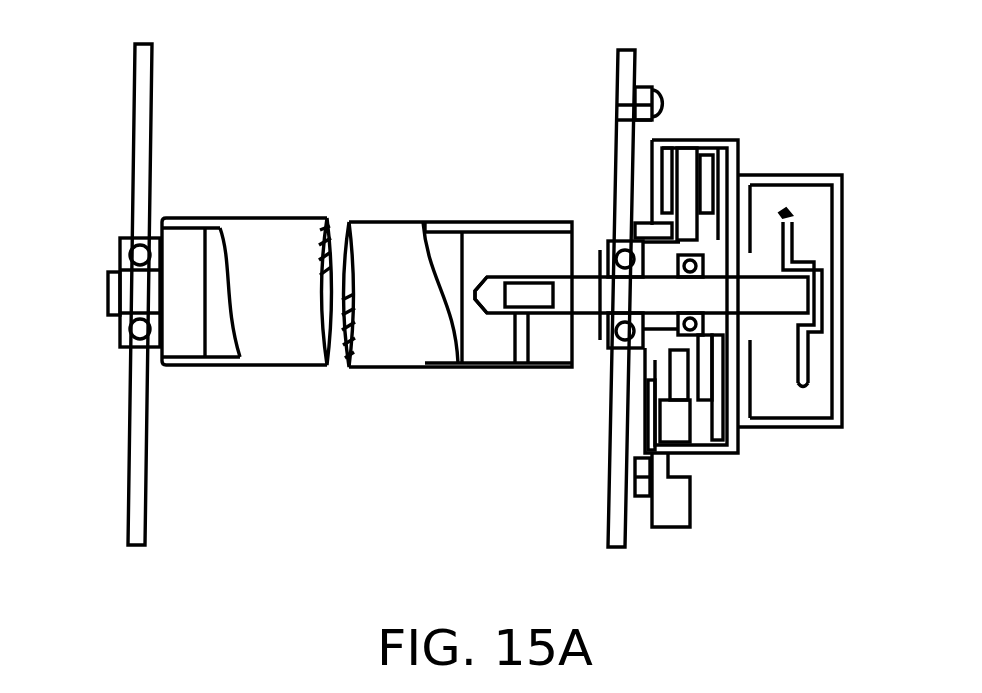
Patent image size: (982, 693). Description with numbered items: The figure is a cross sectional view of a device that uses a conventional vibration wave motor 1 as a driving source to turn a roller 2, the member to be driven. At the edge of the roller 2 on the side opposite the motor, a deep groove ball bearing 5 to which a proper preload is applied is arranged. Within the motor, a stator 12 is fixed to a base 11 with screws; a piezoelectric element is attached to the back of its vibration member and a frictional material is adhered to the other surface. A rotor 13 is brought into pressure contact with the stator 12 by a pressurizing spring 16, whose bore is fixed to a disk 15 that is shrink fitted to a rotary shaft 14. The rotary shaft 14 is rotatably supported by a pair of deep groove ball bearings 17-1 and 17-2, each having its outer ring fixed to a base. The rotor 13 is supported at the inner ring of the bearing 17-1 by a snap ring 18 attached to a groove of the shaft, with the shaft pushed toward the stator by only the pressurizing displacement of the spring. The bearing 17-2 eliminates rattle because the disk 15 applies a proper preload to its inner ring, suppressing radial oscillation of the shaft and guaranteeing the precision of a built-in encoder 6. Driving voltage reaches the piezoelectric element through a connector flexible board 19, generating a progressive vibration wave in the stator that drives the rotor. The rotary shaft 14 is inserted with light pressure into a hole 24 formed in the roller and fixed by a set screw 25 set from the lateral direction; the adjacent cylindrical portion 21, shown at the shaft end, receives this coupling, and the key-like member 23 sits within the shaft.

The motor 1 is at (740, 58).
The roller 2 is at (378, 242).
The deep groove ball bearing 5 is at (126, 240).
The built-in encoder 6 is at (848, 58).
The base 11 is at (636, 430).
The stator 12 is at (676, 430).
The rotor 13 is at (700, 420).
The rotary shaft 14 is at (560, 300).
The disk 15 is at (736, 330).
The pressurizing spring 16 is at (730, 200).
The deep groove ball bearing 17-1 is at (615, 243).
The deep groove ball bearing 17-2 is at (688, 258).
The snap ring 18 is at (601, 330).
The connector flexible board 19 is at (669, 505).
The cylindrical member 21 is at (475, 226).
The key 23 is at (481, 347).
The hole 24 is at (487, 302).
The set screw 25 is at (516, 350).